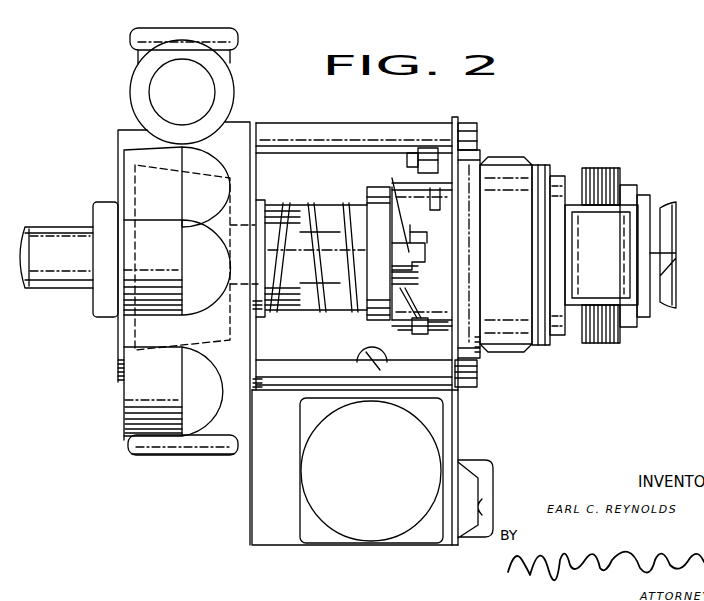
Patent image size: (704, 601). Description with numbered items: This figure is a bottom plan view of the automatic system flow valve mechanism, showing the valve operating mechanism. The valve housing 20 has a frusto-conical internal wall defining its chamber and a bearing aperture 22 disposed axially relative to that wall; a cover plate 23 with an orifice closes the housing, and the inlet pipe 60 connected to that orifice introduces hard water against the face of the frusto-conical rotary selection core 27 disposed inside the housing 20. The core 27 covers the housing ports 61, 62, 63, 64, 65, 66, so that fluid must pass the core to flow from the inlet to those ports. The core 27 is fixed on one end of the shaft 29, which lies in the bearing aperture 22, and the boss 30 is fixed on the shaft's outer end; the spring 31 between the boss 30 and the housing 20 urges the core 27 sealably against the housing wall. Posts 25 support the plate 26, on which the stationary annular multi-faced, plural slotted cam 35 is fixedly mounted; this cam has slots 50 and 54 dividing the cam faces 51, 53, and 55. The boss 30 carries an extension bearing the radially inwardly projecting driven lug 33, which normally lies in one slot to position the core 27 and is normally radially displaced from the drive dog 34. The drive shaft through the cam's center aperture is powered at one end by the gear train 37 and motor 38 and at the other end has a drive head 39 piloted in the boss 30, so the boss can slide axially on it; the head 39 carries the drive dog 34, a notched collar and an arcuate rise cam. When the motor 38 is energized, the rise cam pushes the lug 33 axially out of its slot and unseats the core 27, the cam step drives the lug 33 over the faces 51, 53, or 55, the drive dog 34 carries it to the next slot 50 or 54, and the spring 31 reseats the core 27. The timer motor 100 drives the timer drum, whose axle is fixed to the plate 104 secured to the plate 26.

The valve housing 20 is at (155, 455).
The bearing aperture 22 is at (302, 218).
The cover plate 23 is at (113, 288).
The posts 25 is at (390, 133).
The plate 26 is at (452, 403).
The rotary selection core 27 is at (128, 330).
The shaft 29 is at (325, 238).
The boss 30 is at (376, 191).
The spring 31 is at (284, 206).
The driven lug 33 is at (403, 262).
The drive dog 34 is at (404, 202).
The stationary annular cam 35 is at (485, 355).
The gear train 37 is at (520, 163).
The motor 38 is at (613, 168).
The drive head 39 is at (384, 272).
The slot 50 is at (422, 236).
The cam face 51 is at (413, 212).
The cam face 53 is at (417, 327).
The slot 54 is at (413, 318).
The cam face 55 is at (390, 284).
The inlet pipe 60 is at (38, 232).
The housing port 61 is at (124, 402).
The housing port 62 is at (181, 455).
The housing port 63 is at (205, 24).
The housing port 64 is at (160, 96).
The housing port 65 is at (123, 182).
The housing port 66 is at (117, 247).
The timer motor 100 is at (378, 527).
The plate 104 is at (255, 520).